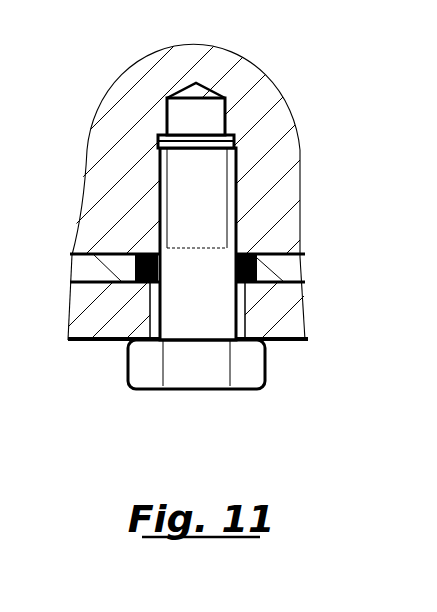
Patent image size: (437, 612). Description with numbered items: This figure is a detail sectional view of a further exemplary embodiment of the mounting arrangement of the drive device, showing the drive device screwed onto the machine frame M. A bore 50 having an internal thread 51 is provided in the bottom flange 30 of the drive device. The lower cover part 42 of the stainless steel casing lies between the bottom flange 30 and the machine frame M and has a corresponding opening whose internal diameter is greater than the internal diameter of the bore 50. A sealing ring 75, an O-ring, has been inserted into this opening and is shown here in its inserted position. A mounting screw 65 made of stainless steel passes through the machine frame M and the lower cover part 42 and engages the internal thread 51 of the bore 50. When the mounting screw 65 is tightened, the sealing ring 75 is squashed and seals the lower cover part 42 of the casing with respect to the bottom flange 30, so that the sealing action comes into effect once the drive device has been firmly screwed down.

The bottom flange 30 is at (268, 98).
The lower cover part 42 is at (293, 270).
The machine frame M is at (293, 317).
The sealing ring 75 is at (143, 250).
The internal thread 51 is at (240, 168).
The bore 50 is at (188, 118).
The mounting screw 65 is at (250, 368).